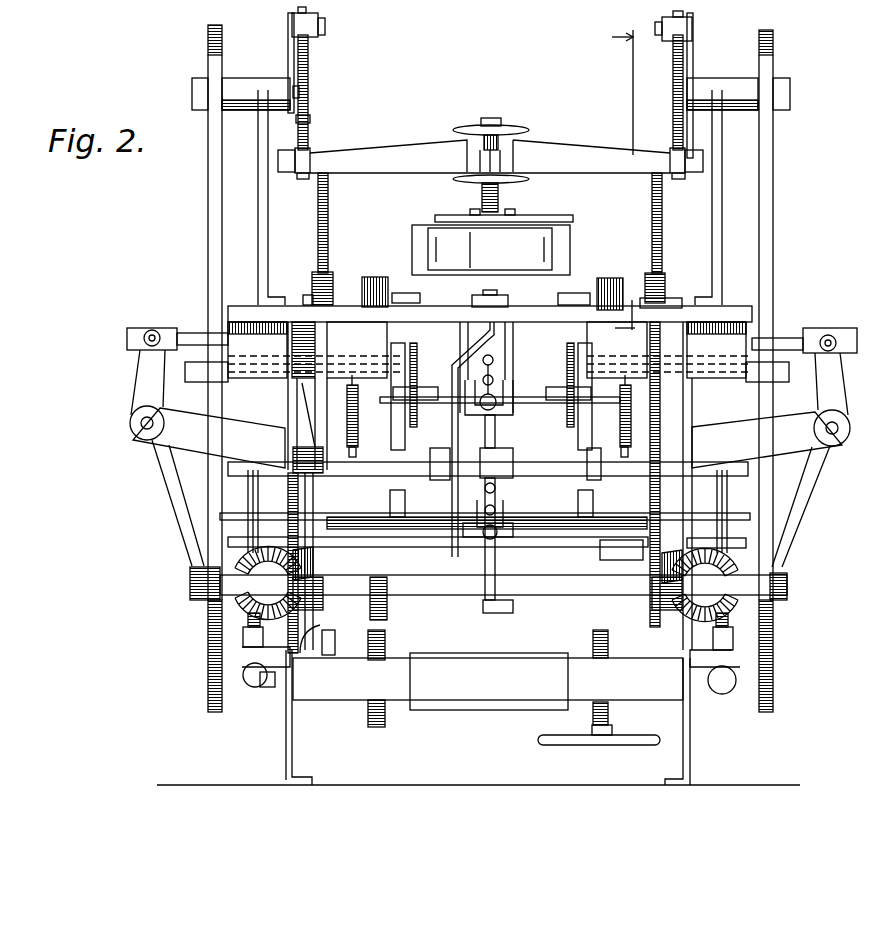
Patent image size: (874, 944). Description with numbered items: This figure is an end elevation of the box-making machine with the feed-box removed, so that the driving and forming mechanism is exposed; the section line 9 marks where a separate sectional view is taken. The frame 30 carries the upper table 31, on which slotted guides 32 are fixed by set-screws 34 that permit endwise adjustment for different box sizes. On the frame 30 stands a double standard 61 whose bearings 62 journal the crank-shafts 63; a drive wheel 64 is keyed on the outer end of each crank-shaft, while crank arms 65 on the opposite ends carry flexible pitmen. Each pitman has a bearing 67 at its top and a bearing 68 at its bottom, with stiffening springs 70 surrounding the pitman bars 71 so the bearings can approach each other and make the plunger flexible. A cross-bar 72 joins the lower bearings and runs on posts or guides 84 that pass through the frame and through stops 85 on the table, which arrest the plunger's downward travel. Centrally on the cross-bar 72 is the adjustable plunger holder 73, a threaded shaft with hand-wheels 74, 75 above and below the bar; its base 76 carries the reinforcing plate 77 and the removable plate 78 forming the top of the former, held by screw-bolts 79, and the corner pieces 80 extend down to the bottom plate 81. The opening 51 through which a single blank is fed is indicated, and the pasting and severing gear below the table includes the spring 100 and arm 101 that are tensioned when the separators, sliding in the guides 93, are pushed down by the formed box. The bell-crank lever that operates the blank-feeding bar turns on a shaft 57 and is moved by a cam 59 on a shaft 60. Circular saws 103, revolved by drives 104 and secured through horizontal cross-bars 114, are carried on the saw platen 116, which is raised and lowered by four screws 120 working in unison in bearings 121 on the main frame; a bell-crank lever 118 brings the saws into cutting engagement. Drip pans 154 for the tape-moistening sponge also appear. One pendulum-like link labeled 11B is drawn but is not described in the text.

The section line 9 is at (627, 184).
The pendulum link 11B is at (520, 382).
The frame 30 is at (197, 384).
The upper table 31 is at (555, 312).
The guides 32 is at (402, 293).
The set-screws 34 is at (482, 296).
The horizontal slot or opening 51 is at (452, 378).
The shaft 57 is at (520, 470).
The cam 59 is at (430, 602).
The shaft 60 is at (515, 582).
The double standard 61 is at (712, 195).
The bearings 62 is at (268, 200).
The crank-shafts 63 is at (308, 92).
The drive wheel 64 is at (222, 54).
The crank arms 65 is at (290, 38).
The bearing 67 is at (318, 23).
The bearing 68 is at (303, 165).
The stiffening springs 70 is at (310, 121).
The pitman bars 71 is at (308, 100).
The cross-bar 72 is at (594, 152).
The adjustable plunger holder 73 is at (498, 197).
The hand-wheel 74 is at (515, 128).
The hand-wheel 75 is at (545, 160).
The base 76 is at (515, 214).
The plate 77 is at (535, 222).
The removable plate 78 is at (567, 245).
The screw-bolts 79 is at (478, 212).
The corner pieces 80 is at (427, 245).
The bottom plate 81 is at (478, 268).
The posts or guides 84 is at (328, 226).
The stops 85 is at (345, 274).
The guides 93 is at (403, 500).
The spring 100 is at (358, 422).
The arm 101 is at (356, 450).
The circular saws 103 is at (435, 548).
The drives 104 is at (245, 477).
The horizontal cross-bars 114 is at (360, 520).
The saw platen 116 is at (745, 541).
The bell-crank lever 118 is at (520, 596).
The screws 120 is at (385, 644).
The bearings 121 is at (492, 660).
The drip pans 154 is at (626, 282).